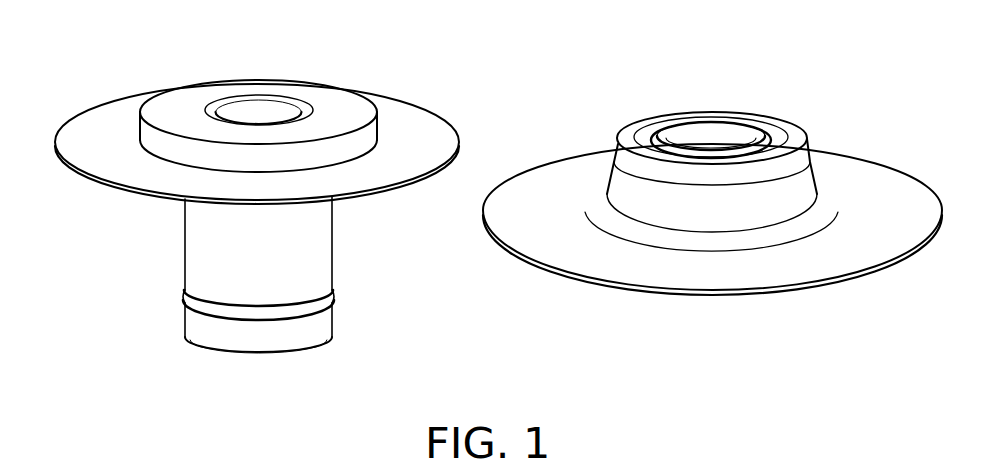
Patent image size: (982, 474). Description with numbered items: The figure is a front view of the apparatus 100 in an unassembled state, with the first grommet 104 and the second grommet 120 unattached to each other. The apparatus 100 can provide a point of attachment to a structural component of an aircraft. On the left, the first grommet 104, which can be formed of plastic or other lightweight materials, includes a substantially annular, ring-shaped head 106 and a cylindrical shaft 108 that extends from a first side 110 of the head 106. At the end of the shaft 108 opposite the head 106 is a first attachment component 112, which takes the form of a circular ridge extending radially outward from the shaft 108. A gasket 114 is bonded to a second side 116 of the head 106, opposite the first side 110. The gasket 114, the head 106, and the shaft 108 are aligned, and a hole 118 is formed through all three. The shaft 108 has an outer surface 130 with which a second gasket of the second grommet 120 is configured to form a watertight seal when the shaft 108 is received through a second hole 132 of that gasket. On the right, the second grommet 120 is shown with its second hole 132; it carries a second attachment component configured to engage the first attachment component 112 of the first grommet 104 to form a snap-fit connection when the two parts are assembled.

The apparatus 100 is at (712, 227).
The first grommet 104 is at (266, 188).
The head 106 is at (266, 149).
The shaft 108 is at (252, 275).
The first side 110 is at (388, 208).
The first attachment component 112 is at (328, 305).
The gasket 114 is at (240, 96).
The second side 116 is at (432, 86).
The hole 118 is at (258, 63).
The second grommet 120 is at (868, 107).
The outer surface 130 is at (313, 240).
The second hole 132 is at (706, 97).